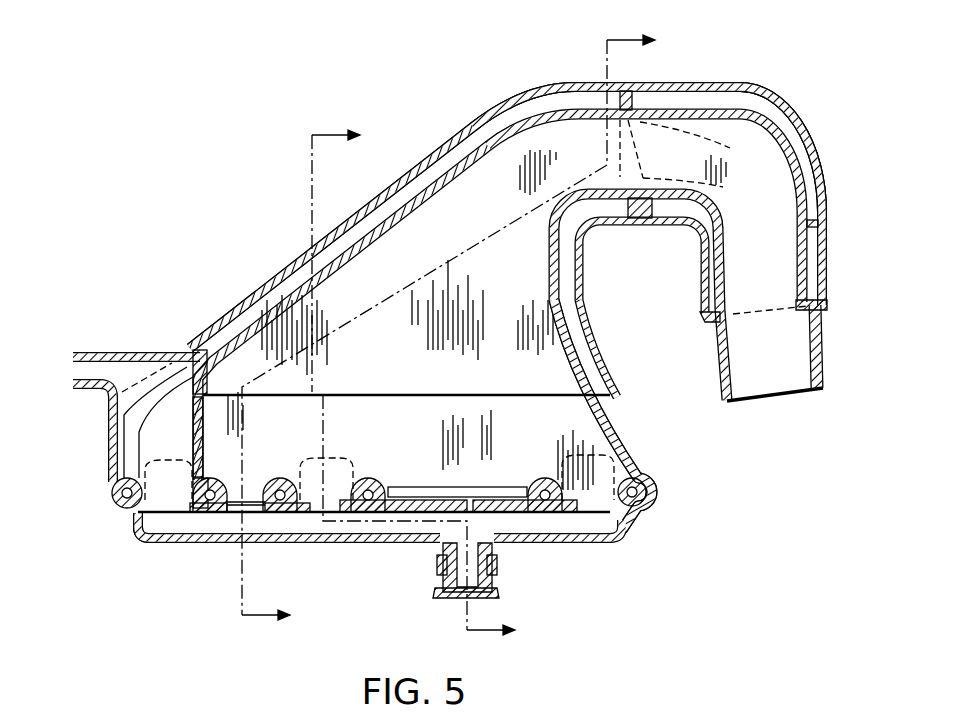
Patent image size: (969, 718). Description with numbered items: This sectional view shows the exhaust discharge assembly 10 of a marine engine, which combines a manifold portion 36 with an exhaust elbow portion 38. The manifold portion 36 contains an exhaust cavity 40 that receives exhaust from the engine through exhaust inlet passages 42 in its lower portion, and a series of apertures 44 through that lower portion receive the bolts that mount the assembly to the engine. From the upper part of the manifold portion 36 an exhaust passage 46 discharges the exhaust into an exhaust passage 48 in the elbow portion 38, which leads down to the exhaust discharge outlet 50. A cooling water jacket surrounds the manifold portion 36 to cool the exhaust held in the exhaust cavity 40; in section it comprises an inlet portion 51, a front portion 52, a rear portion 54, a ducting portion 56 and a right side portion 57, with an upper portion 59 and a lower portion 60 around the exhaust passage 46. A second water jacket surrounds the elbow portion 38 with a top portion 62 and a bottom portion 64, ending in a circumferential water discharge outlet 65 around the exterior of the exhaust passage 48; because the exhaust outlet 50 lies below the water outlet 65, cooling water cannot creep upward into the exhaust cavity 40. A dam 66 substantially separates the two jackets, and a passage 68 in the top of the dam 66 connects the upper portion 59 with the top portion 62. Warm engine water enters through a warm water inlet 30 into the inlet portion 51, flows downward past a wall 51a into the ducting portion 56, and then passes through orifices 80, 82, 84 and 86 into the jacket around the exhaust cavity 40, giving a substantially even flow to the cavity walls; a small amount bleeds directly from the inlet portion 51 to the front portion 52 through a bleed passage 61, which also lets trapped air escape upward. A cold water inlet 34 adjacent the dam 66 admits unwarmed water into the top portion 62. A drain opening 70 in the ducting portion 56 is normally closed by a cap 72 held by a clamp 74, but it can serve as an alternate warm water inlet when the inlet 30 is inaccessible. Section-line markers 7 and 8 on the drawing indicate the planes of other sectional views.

The exhaust discharge assembly 10 is at (266, 133).
The warm water inlet 30 is at (100, 352).
The cold water inlet 34 is at (686, 130).
The manifold portion 36 is at (262, 245).
The exhaust elbow portion 38 is at (814, 98).
The exhaust cavity 40 is at (478, 283).
The exhaust inlet passages 42 is at (170, 460).
The apertures 44 is at (118, 497).
The exhaust passage 46 is at (648, 158).
The exhaust passage 48 is at (750, 300).
The exhaust discharge outlet 50 is at (793, 397).
The inlet portion 51 is at (123, 432).
The wall 51a is at (203, 412).
The front portion 52 is at (382, 205).
The rear portion 54 is at (580, 343).
The ducting portion 56 is at (287, 522).
The right side portion 57 is at (425, 425).
The upper portion 59 is at (525, 100).
The lower portion 60 is at (600, 203).
The bleed passage 61 is at (192, 347).
The top portion 62 is at (774, 112).
The bottom portion 64 is at (695, 225).
The circumferential water discharge outlet 65 is at (826, 312).
The dam 66 is at (685, 185).
The passage 68 is at (638, 96).
The drain opening 70 is at (480, 577).
The cap 72 is at (447, 592).
The clamp 74 is at (437, 562).
The orifice 80 is at (235, 513).
The orifice 82 is at (333, 513).
The orifice 84 is at (493, 537).
The orifice 86 is at (593, 517).
The section line 7- 7 is at (457, 336).
The section line 8- 8 is at (354, 376).